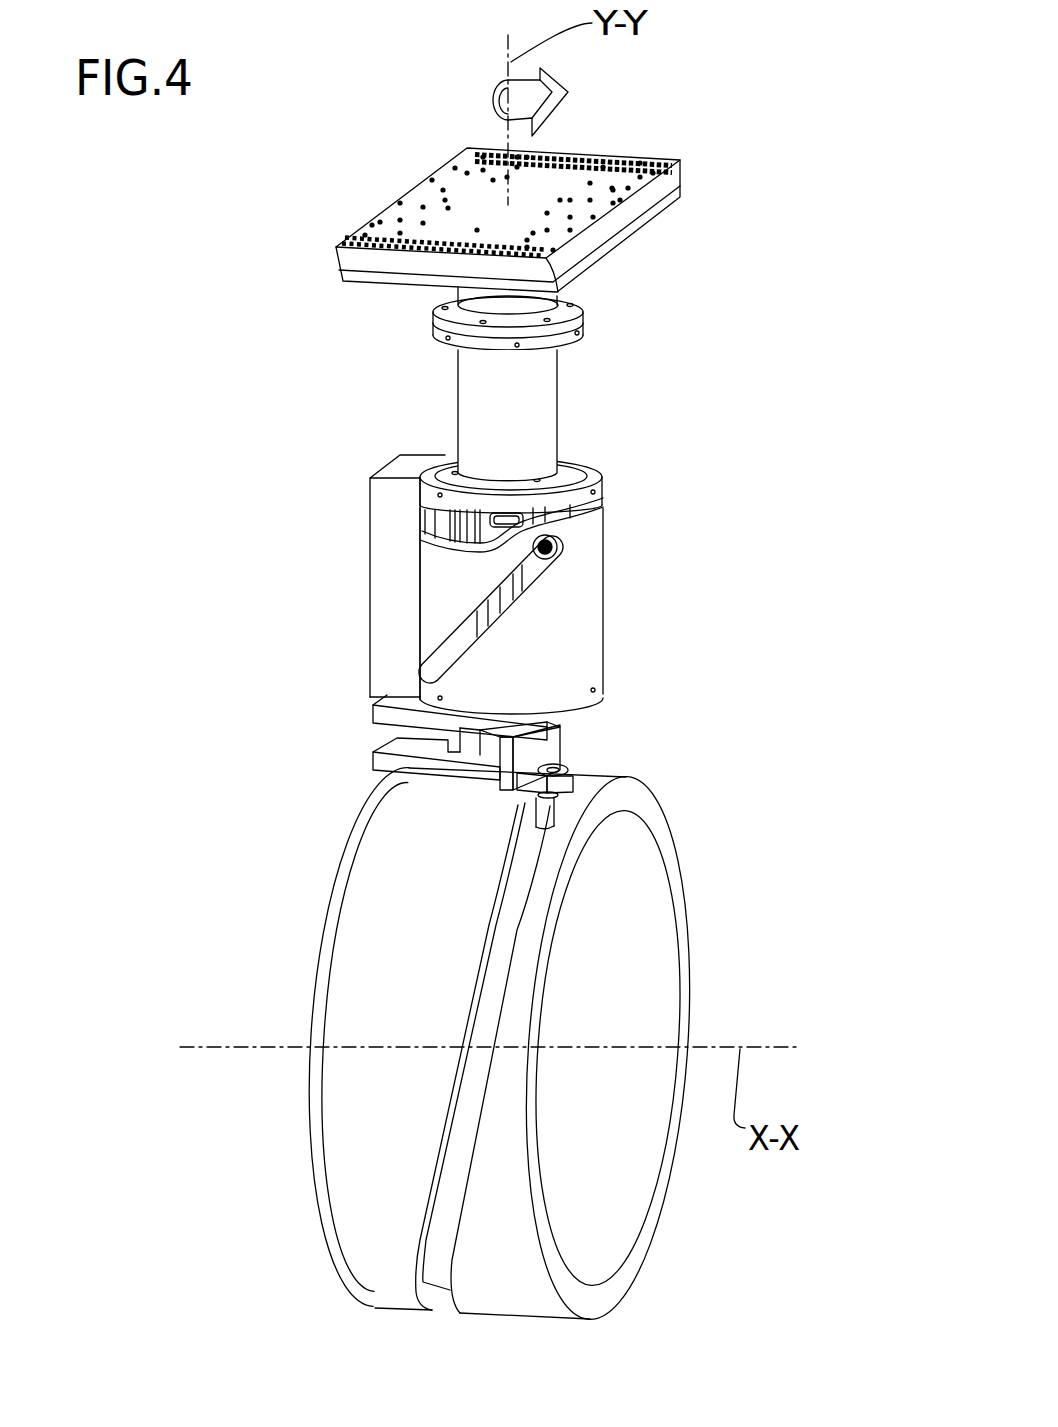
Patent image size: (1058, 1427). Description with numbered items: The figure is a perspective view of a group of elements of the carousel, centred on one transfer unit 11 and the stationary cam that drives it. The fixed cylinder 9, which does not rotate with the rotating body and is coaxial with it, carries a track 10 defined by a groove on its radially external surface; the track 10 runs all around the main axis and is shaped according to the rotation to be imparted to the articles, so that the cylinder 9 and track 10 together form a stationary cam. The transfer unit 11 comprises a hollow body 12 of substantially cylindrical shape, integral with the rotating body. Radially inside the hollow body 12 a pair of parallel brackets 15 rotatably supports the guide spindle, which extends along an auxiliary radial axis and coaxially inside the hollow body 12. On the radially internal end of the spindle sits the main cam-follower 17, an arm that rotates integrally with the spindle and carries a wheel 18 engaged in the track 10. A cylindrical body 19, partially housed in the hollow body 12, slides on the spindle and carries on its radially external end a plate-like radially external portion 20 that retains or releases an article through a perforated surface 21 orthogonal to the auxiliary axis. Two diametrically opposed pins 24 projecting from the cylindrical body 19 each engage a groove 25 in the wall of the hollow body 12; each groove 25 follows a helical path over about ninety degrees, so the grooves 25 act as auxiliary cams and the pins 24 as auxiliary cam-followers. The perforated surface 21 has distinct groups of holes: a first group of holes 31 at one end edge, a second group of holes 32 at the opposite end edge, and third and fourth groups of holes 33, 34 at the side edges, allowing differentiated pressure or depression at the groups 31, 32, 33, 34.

The fixed cylinder 9 is at (561, 1063).
The track 10 is at (440, 1250).
The transfer unit 11 is at (571, 500).
The hollow body 12 is at (567, 606).
The brackets 15 is at (373, 717).
The main cam-follower 17 is at (578, 747).
The wheel 18 is at (550, 810).
The cylindrical body 19 is at (569, 404).
The radially external portion 20 is at (543, 169).
The perforated surface 21 is at (483, 214).
The pins 24 is at (559, 553).
The grooves 25 is at (470, 617).
The first group of holes 31 is at (603, 143).
The second group of holes 32 is at (336, 241).
The third group of holes 33 is at (421, 186).
The fourth group of holes 34 is at (616, 183).